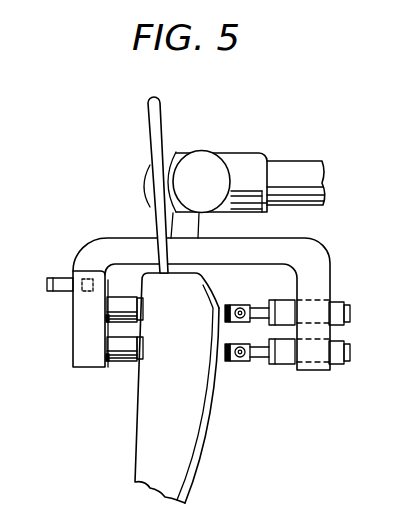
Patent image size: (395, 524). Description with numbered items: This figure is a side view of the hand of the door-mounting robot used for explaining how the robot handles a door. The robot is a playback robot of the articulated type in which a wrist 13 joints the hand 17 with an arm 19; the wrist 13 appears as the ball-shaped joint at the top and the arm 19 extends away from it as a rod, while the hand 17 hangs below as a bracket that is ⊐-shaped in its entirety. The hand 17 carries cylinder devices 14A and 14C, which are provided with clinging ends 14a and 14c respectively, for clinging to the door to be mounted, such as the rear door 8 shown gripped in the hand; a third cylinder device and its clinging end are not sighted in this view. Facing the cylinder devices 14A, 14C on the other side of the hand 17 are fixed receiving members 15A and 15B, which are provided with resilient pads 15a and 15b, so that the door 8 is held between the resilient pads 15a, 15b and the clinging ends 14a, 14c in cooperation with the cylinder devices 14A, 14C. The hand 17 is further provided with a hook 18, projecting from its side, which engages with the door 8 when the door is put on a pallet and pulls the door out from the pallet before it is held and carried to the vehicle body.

The rear door 8 is at (198, 472).
The wrist 13 is at (214, 149).
The arm 19 is at (288, 165).
The hand 17 is at (76, 256).
The hook 18 is at (58, 293).
The fixed receiving member 15A is at (123, 297).
The fixed receiving member 15B is at (125, 359).
The resilient pad 15a is at (144, 310).
The resilient pad 15b is at (144, 352).
The clinging end 14a is at (229, 306).
The clinging end 14c is at (233, 362).
The cylinder device 14A is at (333, 302).
The cylinder device 14C is at (286, 364).